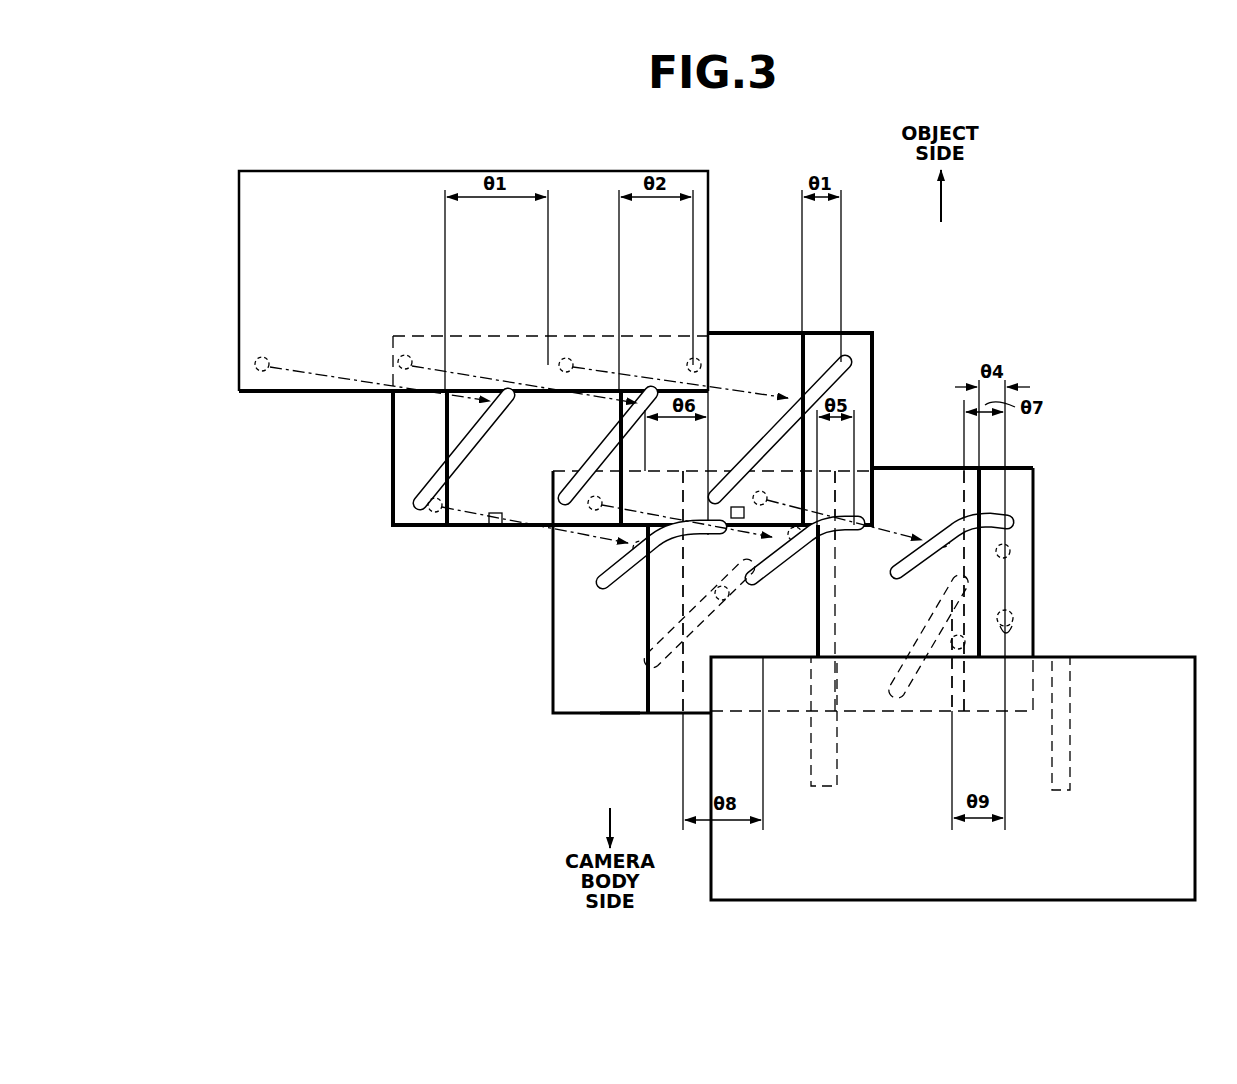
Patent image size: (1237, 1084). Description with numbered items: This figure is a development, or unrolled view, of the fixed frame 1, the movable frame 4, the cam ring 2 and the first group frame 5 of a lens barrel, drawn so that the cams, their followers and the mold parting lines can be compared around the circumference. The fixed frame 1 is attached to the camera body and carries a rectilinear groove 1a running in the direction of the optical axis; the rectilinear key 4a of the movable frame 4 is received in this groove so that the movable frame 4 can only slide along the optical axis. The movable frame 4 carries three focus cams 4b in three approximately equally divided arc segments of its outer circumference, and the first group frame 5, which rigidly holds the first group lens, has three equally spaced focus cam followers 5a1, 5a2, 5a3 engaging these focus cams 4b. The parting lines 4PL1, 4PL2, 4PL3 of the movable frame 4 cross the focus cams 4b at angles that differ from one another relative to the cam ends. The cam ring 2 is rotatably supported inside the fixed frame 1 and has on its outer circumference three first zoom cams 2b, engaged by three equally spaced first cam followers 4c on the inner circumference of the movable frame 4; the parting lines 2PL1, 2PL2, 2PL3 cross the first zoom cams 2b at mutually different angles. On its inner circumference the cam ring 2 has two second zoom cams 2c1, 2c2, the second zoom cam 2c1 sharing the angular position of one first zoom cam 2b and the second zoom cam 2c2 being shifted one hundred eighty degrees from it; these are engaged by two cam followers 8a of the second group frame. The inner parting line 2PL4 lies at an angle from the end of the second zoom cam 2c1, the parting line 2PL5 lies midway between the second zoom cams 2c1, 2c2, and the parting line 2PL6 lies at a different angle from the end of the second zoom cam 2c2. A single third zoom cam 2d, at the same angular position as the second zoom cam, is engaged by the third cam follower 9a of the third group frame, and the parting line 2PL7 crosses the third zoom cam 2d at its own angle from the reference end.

The fixed frame 1 is at (730, 893).
The rectilinear groove 1a is at (822, 800).
The cam ring 2 is at (568, 694).
The first zoom cam 2b is at (605, 585).
The second zoom cam 2c1 is at (1012, 551).
The second zoom cam 2c2 is at (620, 716).
The third zoom cam 2d is at (1014, 615).
The parting line 2PL1 is at (984, 595).
The parting line 2PL2 is at (815, 606).
The parting line 2PL3 is at (642, 637).
The parting line 2PL4 is at (968, 497).
The parting line 2PL5 is at (840, 680).
The parting line 2PL6 is at (684, 705).
The parting line 2PL7 is at (952, 678).
The movable frame 4 is at (400, 520).
The rectilinear key 4a is at (496, 526).
The focus cam 4b is at (425, 510).
The first cam follower 4c is at (428, 498).
The parting line 4PL1 is at (800, 360).
The parting line 4PL2 is at (612, 405).
The parting line 4PL3 is at (440, 410).
The first group frame 5 is at (243, 196).
The focus cam follower 5a1 is at (566, 374).
The focus cam follower 5a2 is at (405, 371).
The focus cam follower 5a3 is at (262, 372).
The cam follower 8a is at (724, 602).
The third cam follower 9a is at (1012, 632).